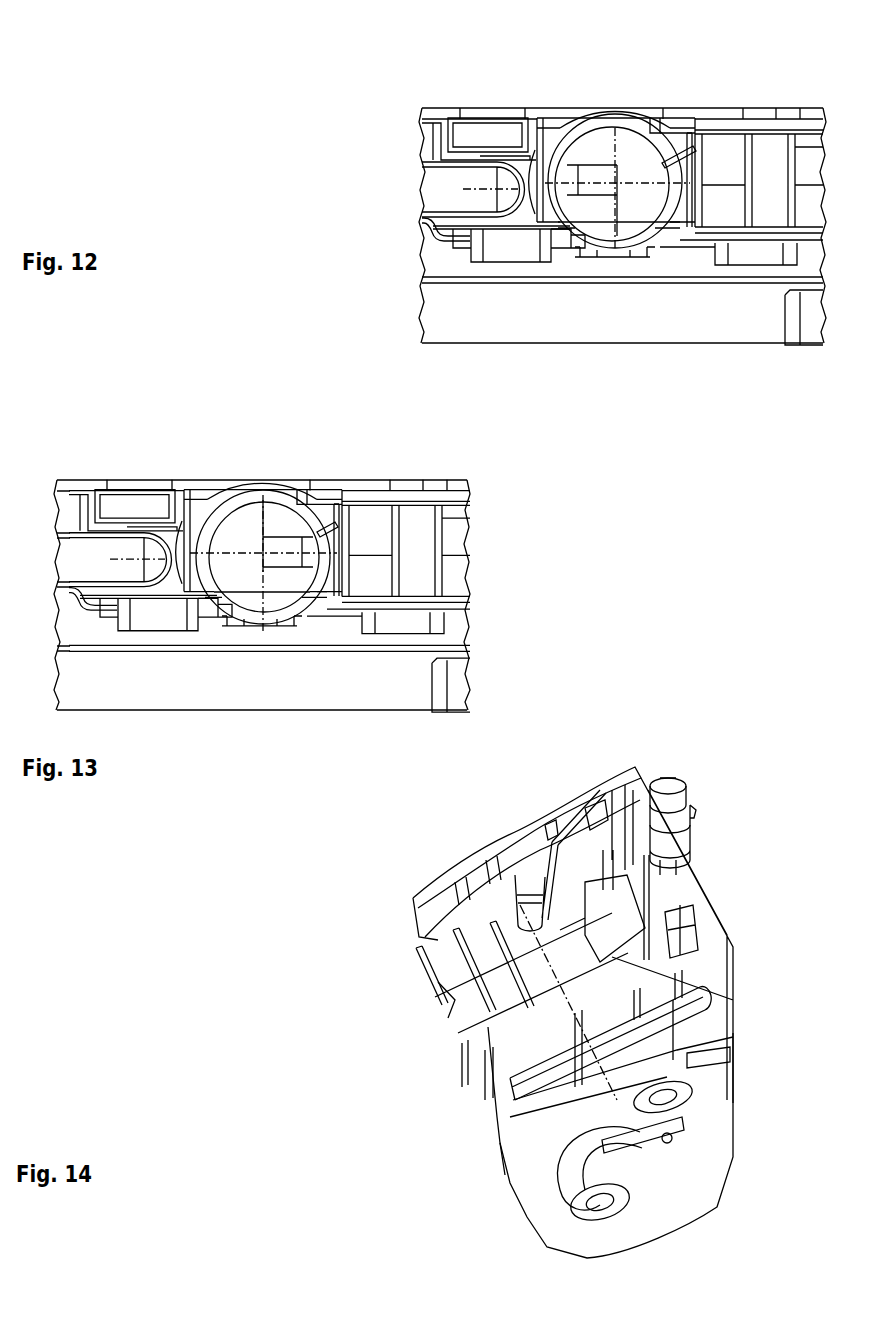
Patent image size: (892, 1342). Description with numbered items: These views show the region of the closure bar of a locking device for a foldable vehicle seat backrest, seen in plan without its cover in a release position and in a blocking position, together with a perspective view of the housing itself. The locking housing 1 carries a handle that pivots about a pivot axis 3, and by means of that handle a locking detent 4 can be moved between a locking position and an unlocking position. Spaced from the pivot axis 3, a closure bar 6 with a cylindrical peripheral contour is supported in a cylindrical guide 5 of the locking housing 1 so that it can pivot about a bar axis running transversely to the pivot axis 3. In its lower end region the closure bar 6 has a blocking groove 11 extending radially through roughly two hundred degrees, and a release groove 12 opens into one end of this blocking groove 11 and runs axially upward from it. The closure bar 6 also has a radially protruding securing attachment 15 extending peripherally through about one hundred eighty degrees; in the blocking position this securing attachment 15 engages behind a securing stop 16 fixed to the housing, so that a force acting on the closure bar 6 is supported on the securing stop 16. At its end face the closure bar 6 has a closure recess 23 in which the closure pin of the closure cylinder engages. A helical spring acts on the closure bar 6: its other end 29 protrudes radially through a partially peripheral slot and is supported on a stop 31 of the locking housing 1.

In FIG. 14, the locking housing 1 is at (425, 975).
In FIG. 14, the pivot axis 3 is at (550, 975).
In FIG. 14, the locking detent 4 is at (677, 1142).
In FIG. 14, the cylindrical guide 5 is at (693, 923).
In FIG. 12, the closure bar 6 is at (630, 218).
In FIG. 13, the closure bar 6 is at (282, 588).
In FIG. 14, the closure bar 6 is at (716, 789).
In FIG. 14, the blocking groove 11 is at (688, 848).
In FIG. 14, the release groove 12 is at (650, 842).
In FIG. 12, the securing attachment 15 is at (578, 130).
In FIG. 13, the securing attachment 15 is at (320, 573).
In FIG. 14, the securing attachment 15 is at (690, 812).
In FIG. 12, the securing stop 16 is at (606, 243).
In FIG. 13, the securing stop 16 is at (253, 613).
In FIG. 14, the securing stop 16 is at (630, 957).
In FIG. 12, the closure recess 23 is at (593, 190).
In FIG. 13, the closure recess 23 is at (282, 550).
In FIG. 14, the closure recess 23 is at (662, 790).
In FIG. 12, the other end of the helical spring 29 is at (697, 143).
In FIG. 13, the other end of the helical spring 29 is at (337, 532).
In FIG. 12, the stop 31 is at (692, 160).
In FIG. 13, the stop 31 is at (337, 533).